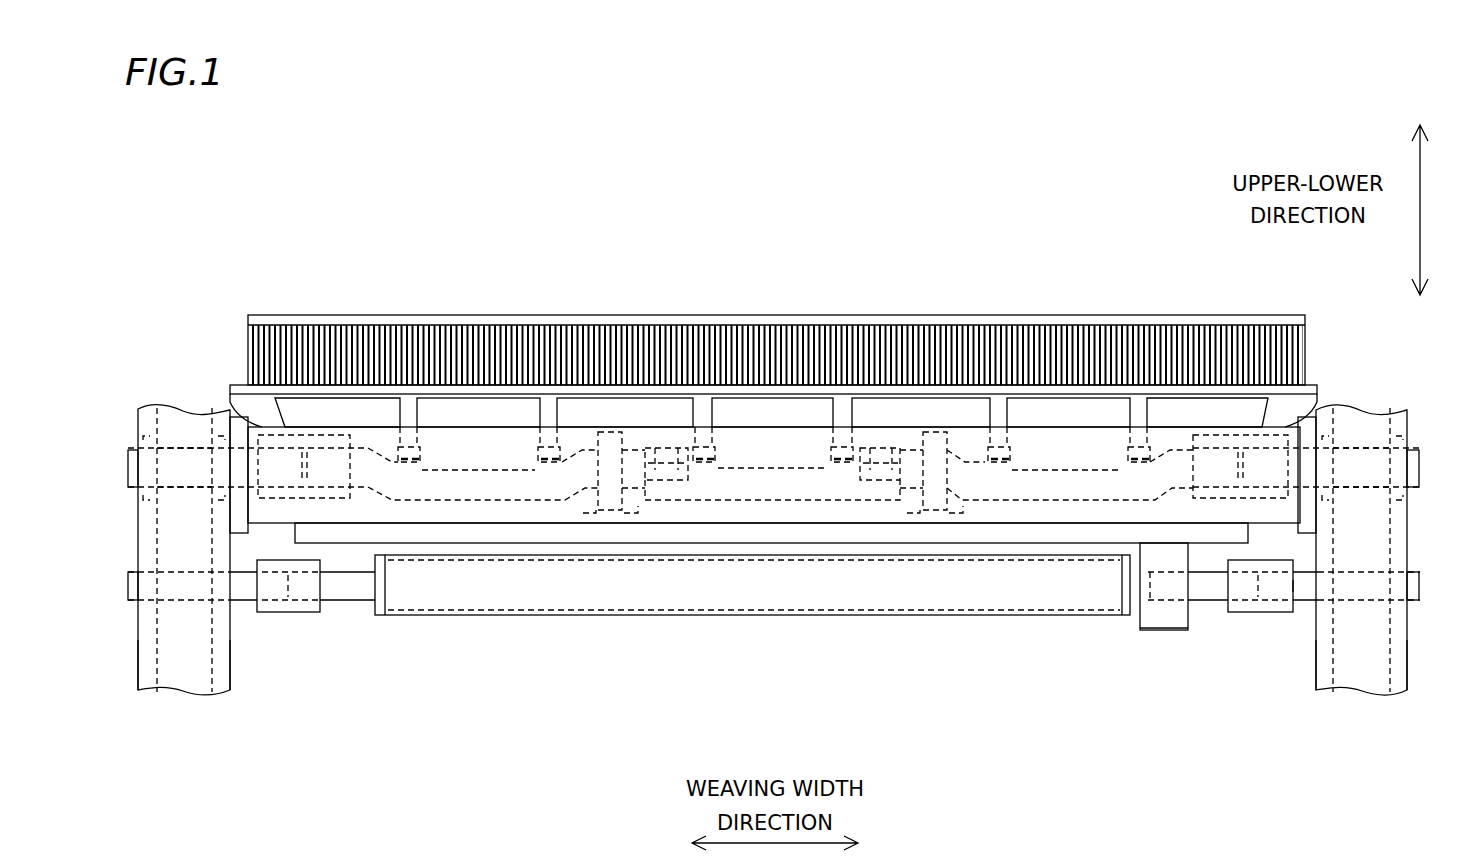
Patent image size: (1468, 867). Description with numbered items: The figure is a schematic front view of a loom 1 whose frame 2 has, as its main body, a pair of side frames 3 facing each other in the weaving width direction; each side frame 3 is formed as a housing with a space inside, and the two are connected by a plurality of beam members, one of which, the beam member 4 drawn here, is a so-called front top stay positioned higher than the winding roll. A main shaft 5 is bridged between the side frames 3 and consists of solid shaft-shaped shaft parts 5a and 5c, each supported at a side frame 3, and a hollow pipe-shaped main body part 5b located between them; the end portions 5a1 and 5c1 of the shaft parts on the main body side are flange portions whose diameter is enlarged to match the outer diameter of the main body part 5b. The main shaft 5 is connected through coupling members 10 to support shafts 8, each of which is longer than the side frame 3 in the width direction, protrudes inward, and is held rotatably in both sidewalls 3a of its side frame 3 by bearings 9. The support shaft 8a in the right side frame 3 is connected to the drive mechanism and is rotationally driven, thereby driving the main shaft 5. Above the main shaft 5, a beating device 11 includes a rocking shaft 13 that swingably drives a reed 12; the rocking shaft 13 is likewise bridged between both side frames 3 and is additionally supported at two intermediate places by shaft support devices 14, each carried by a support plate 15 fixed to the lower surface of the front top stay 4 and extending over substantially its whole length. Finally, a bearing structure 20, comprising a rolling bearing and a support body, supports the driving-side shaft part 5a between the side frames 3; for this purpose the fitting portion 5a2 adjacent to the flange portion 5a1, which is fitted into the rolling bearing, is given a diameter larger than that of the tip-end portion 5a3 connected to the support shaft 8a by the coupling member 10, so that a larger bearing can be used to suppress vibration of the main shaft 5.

The loom 1 is at (192, 233).
The frame 2 is at (171, 364).
The side frame 3 is at (224, 717).
The sidewall 3a is at (147, 662).
The beam member (front top stay) 4 is at (778, 435).
The main shaft 5 is at (568, 680).
The shaft part 5a is at (1213, 620).
The end portion (flange portion) 5a1 is at (1132, 618).
The fitting portion 5a2 is at (1147, 632).
The tip end side portion 5a3 is at (1245, 614).
The main body part 5b is at (715, 618).
The shaft part 5c is at (355, 620).
The end portion (flange portion) 5c1 is at (380, 616).
The support shaft 8 is at (133, 577).
The support shaft (one support shaft) 8a is at (1365, 580).
The bearing 9 is at (148, 557).
The coupling member 10 is at (298, 612).
The beating device 11 is at (367, 284).
The reed 12 is at (703, 320).
The rocking shaft 13 is at (1060, 460).
The shaft support device 14 is at (597, 435).
The support plate 15 is at (818, 535).
The bearing structure 20 is at (1169, 650).